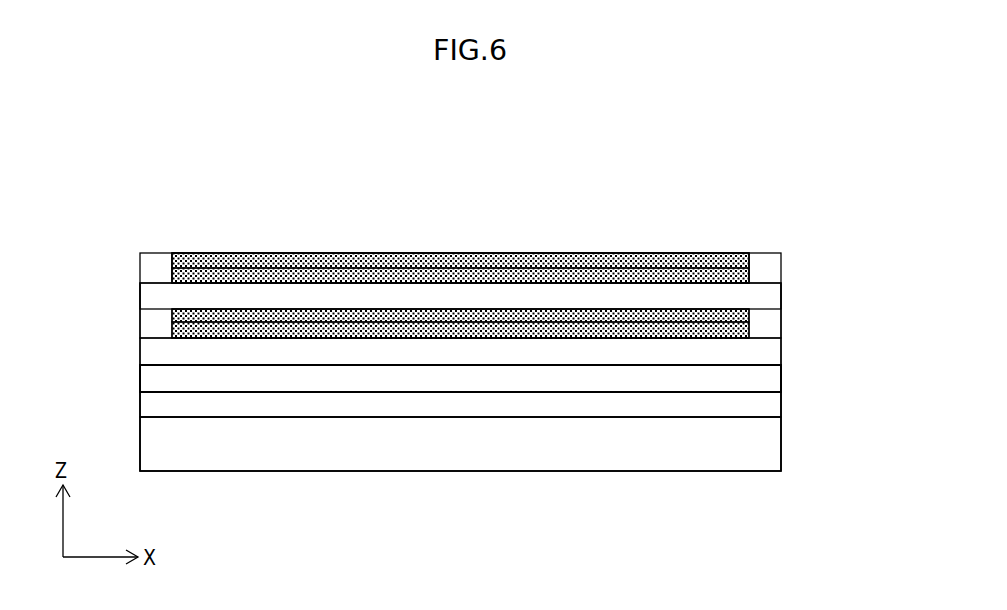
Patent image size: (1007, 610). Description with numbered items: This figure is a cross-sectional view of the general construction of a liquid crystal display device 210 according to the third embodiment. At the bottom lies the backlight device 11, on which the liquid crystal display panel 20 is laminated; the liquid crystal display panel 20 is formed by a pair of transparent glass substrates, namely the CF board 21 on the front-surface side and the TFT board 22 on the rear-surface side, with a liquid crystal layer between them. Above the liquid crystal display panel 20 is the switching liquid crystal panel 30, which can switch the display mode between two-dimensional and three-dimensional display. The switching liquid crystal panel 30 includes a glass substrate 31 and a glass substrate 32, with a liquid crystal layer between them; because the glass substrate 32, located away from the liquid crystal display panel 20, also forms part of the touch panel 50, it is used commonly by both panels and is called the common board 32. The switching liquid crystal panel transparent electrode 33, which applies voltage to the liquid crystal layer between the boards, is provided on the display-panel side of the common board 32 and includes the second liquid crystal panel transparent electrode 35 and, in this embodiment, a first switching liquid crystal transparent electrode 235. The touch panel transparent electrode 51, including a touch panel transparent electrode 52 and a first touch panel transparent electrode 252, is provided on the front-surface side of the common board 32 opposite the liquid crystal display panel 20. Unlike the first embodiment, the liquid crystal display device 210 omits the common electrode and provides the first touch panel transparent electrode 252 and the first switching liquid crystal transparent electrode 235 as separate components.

The backlight device 11 is at (773, 452).
The liquid crystal display panel 20 is at (836, 357).
The CF board 21 is at (768, 378).
The TFT board 22 is at (773, 406).
The switching liquid crystal panel 30 is at (158, 322).
The glass substrate 31 is at (148, 352).
The common board 32 is at (148, 296).
The switching liquid crystal panel transparent electrode 33 is at (524, 327).
The second liquid crystal panel transparent electrode 35 is at (740, 330).
The first switching liquid crystal transparent electrode 235 is at (713, 309).
The touch panel 50 is at (773, 258).
The touch panel transparent electrode 51 is at (460, 215).
The touch panel transparent electrode 52 is at (400, 262).
The first touch panel transparent electrode 252 is at (520, 277).
The liquid crystal display device 210 is at (777, 489).